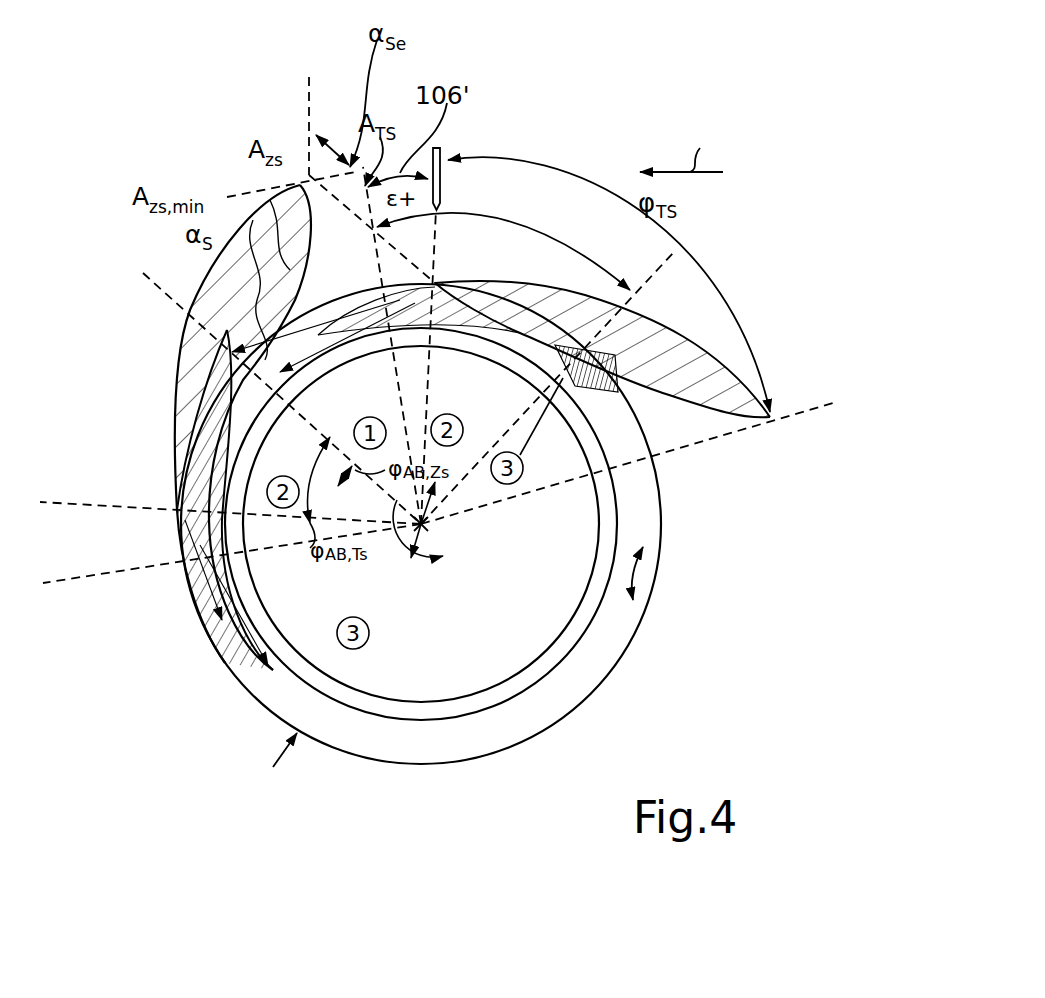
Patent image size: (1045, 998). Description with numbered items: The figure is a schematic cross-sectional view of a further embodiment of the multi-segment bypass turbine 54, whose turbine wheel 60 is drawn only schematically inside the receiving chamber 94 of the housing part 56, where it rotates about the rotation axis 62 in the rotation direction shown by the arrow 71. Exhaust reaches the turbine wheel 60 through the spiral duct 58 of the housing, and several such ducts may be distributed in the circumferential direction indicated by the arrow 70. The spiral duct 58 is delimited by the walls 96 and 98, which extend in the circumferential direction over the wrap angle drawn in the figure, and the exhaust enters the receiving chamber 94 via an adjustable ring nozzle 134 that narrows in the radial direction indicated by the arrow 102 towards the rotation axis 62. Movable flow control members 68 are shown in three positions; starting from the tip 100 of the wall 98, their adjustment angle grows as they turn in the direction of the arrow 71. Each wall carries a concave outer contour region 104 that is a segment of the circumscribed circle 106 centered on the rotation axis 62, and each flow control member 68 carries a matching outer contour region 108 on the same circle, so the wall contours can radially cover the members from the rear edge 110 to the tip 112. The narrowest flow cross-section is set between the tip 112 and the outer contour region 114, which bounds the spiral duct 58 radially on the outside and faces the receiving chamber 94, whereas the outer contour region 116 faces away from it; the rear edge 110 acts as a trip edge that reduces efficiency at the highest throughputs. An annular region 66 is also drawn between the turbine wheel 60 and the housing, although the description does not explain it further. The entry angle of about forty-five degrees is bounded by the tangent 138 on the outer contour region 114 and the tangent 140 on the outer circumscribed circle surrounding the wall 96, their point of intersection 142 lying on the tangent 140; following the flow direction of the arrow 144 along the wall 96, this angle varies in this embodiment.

The turbine 54 is at (551, 786).
The housing part 56 is at (276, 764).
The spiral duct 58 is at (456, 160).
The turbine wheel 60 is at (537, 647).
The rotation axis 62 is at (427, 522).
The ring region 66 is at (647, 517).
The flow control member 68 is at (290, 315).
The arrow indicating circumferential direction 70 is at (657, 573).
The arrow indicating rotation direction 71 is at (398, 550).
The receiving chamber 94 is at (561, 564).
The wall 96 is at (250, 220).
The wall 98 is at (647, 313).
The tip of the wall 100 is at (437, 281).
The arrow indicating radial direction 102 is at (440, 566).
The outer contour region 104 is at (495, 290).
The circumscribed circle 106 is at (225, 667).
The outer contour region 108 is at (598, 332).
The rear edge 110 is at (760, 337).
The tip of the flow control member 112 is at (170, 567).
The outer contour region 114 is at (335, 330).
The outer contour region 116 is at (687, 320).
The ring nozzle 134 is at (352, 285).
The tangent 138 is at (309, 77).
The tangent 140 is at (227, 193).
The point of intersection 142 is at (303, 167).
The directional arrow 144 is at (687, 143).